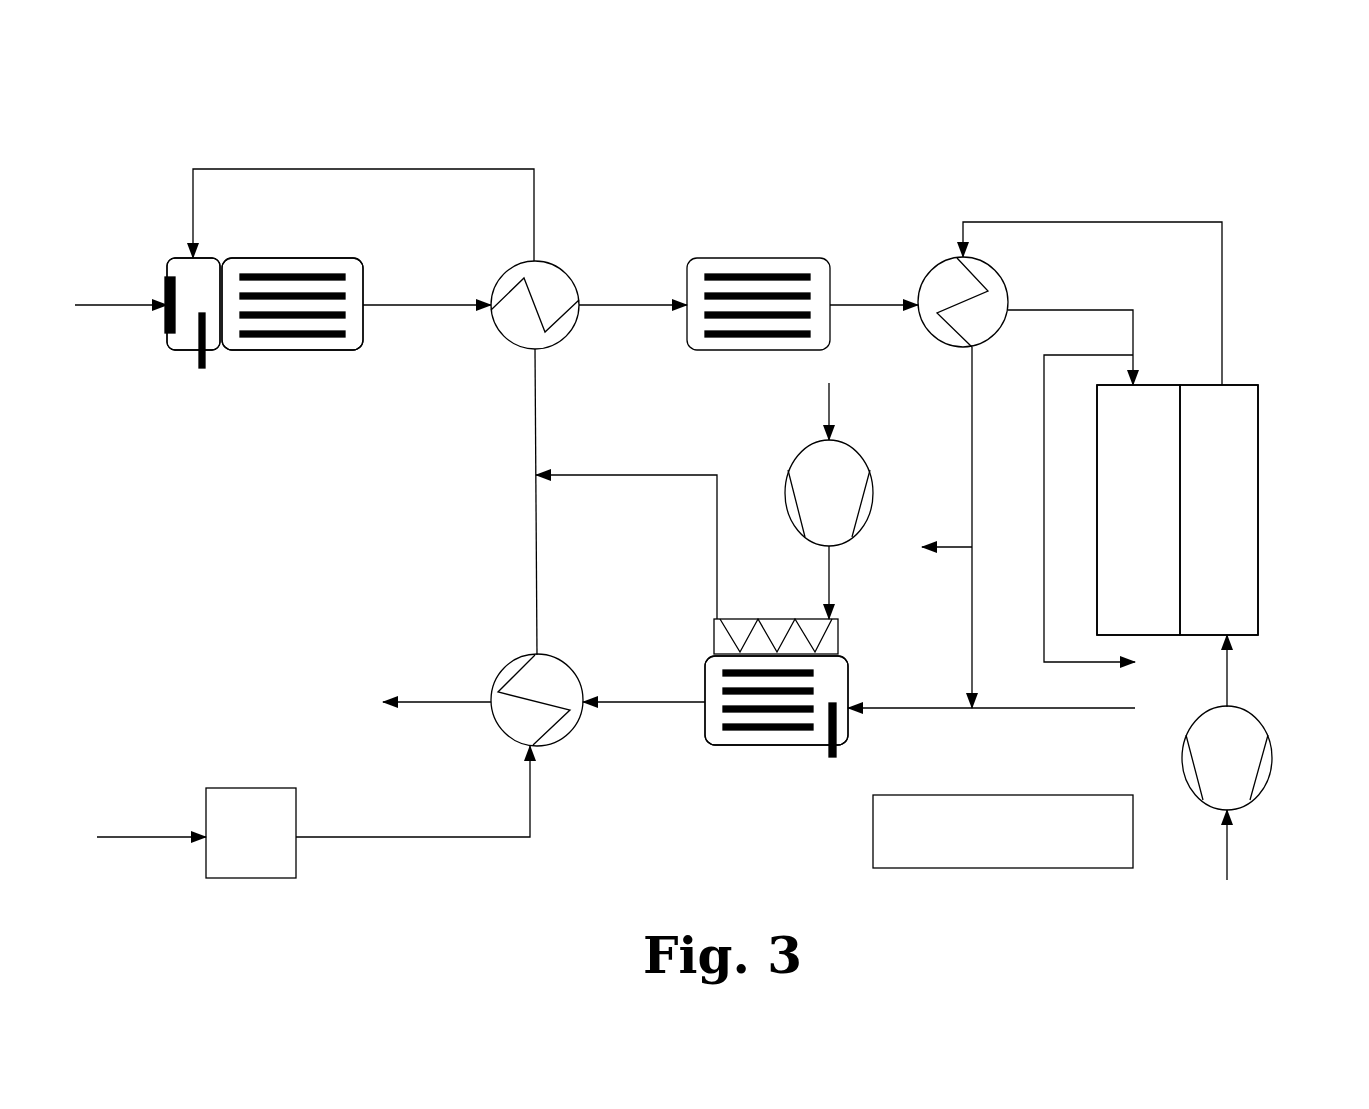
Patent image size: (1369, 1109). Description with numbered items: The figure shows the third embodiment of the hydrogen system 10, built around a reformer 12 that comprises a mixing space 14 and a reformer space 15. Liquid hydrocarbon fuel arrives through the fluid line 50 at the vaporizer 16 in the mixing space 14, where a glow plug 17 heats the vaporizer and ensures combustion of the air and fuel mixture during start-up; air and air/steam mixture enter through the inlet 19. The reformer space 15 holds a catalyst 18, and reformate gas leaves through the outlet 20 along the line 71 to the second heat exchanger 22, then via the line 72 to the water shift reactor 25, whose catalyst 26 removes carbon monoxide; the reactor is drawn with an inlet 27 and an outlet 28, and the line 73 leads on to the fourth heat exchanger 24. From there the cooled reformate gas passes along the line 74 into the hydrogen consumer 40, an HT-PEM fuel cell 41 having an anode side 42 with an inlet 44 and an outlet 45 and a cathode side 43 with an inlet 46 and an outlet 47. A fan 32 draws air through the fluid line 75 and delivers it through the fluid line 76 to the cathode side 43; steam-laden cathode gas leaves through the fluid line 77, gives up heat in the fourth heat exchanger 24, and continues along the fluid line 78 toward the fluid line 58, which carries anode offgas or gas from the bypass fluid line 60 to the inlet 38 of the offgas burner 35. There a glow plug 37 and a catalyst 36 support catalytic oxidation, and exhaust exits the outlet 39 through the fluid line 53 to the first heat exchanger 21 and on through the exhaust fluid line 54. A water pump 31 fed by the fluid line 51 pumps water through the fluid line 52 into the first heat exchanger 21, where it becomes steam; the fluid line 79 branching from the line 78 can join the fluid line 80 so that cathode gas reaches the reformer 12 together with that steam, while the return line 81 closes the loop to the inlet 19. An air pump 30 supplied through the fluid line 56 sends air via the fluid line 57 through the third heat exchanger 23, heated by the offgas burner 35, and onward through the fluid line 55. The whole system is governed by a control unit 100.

The hydrogen system 10 is at (760, 172).
The reformer 12 is at (277, 392).
The mixing space 14 is at (172, 350).
The reformer space 15 is at (320, 350).
The vaporizer 16 is at (167, 287).
The glow plug 17 is at (203, 368).
The catalyst 18 is at (312, 277).
The inlet 19 is at (196, 258).
The outlet 20 is at (366, 302).
The first heat exchanger 21 is at (493, 686).
The second heat exchanger 22 is at (560, 268).
The third heat exchanger 23 is at (735, 619).
The fourth heat exchanger 24 is at (1005, 275).
The water shift reactor 25 is at (775, 258).
The catalyst 26 is at (715, 337).
The inlet 27 is at (684, 304).
The outlet 28 is at (832, 305).
The air pump 30 is at (848, 442).
The water pump 31 is at (228, 788).
The fan 32 is at (1272, 765).
The offgas burner 35 is at (725, 745).
The catalyst 36 is at (778, 730).
The glow plug 37 is at (836, 752).
The inlet 38 is at (848, 700).
The outlet 39 is at (705, 705).
The hydrogen consumer 40 is at (1282, 388).
The HT-PEM fuel cell 41 is at (1259, 490).
The anode side 42 is at (1150, 524).
The cathode side 43 is at (1232, 524).
The inlet 44 is at (1137, 380).
The outlet 45 is at (1135, 636).
The inlet 46 is at (1230, 636).
The outlet 47 is at (1224, 384).
The fluid line 50 is at (95, 307).
The fluid line 51 is at (164, 835).
The fluid line 52 is at (385, 840).
The fluid line 53 is at (620, 700).
The exhaust fluid line 54 is at (442, 704).
The fluid line 55 is at (660, 477).
The fluid line 56 is at (829, 415).
The fluid line 57 is at (832, 575).
The fluid line 58 is at (1025, 710).
The bypass fluid line 60 is at (1044, 690).
The conduit 71 is at (418, 308).
The fluid line 72 is at (632, 307).
The conduit 73 is at (880, 308).
The conduit 74 is at (1096, 310).
The fluid line 75 is at (1232, 858).
The fluid line 76 is at (1232, 688).
The fluid line 77 is at (1222, 254).
The fluid line 78 is at (972, 612).
The fluid line 79 is at (945, 545).
The fluid line 80 is at (536, 578).
The recycle conduit 81 is at (348, 169).
The control unit 100 is at (873, 800).